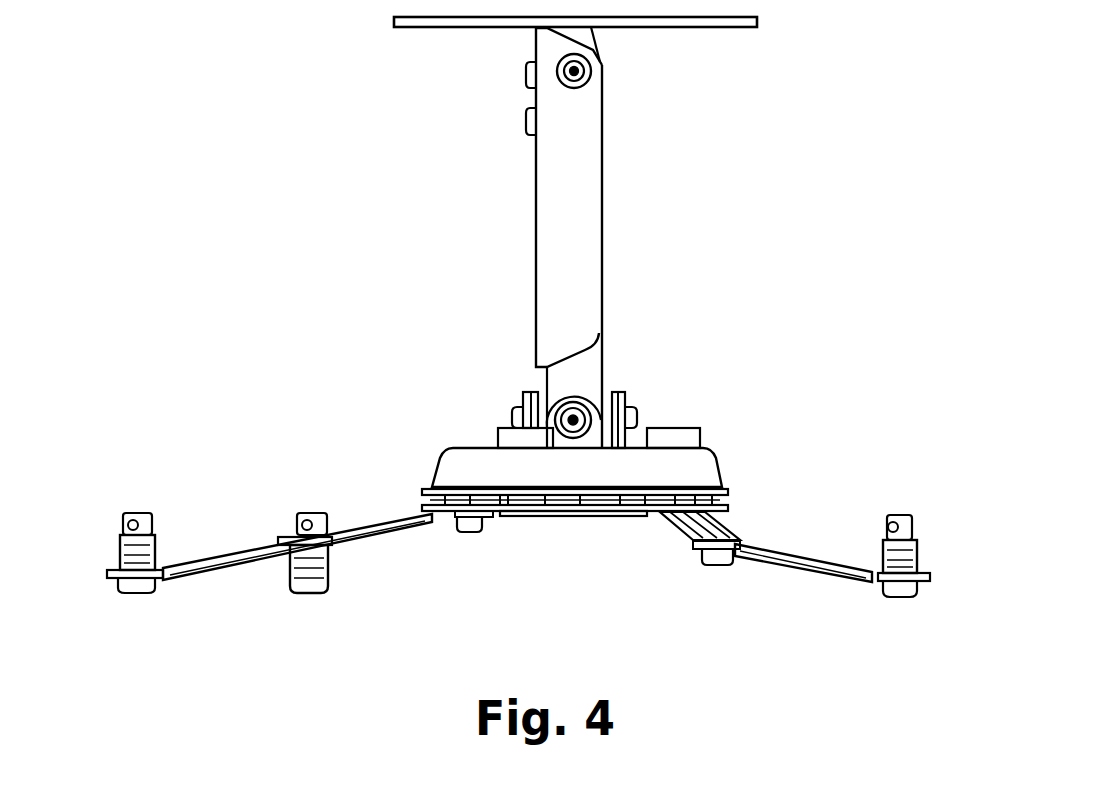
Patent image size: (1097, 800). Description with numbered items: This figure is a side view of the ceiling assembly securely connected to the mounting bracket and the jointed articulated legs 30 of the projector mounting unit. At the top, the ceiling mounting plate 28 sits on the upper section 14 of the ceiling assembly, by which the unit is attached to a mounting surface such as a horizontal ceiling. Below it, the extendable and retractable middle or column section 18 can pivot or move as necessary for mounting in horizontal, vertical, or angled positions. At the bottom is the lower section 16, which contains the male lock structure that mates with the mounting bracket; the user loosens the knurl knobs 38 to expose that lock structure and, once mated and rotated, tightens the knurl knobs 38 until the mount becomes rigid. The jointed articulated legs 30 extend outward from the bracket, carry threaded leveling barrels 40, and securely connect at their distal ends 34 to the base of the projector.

The upper section 14 is at (593, 38).
The lower section 16 is at (628, 393).
The middle section 18 is at (602, 198).
The ceiling mounting plate 28 is at (757, 22).
The jointed articulated legs 30 is at (222, 556).
The distal ends 34 is at (108, 572).
The knurl knobs 38 is at (498, 435).
The threaded leveling barrels 40 is at (135, 596).